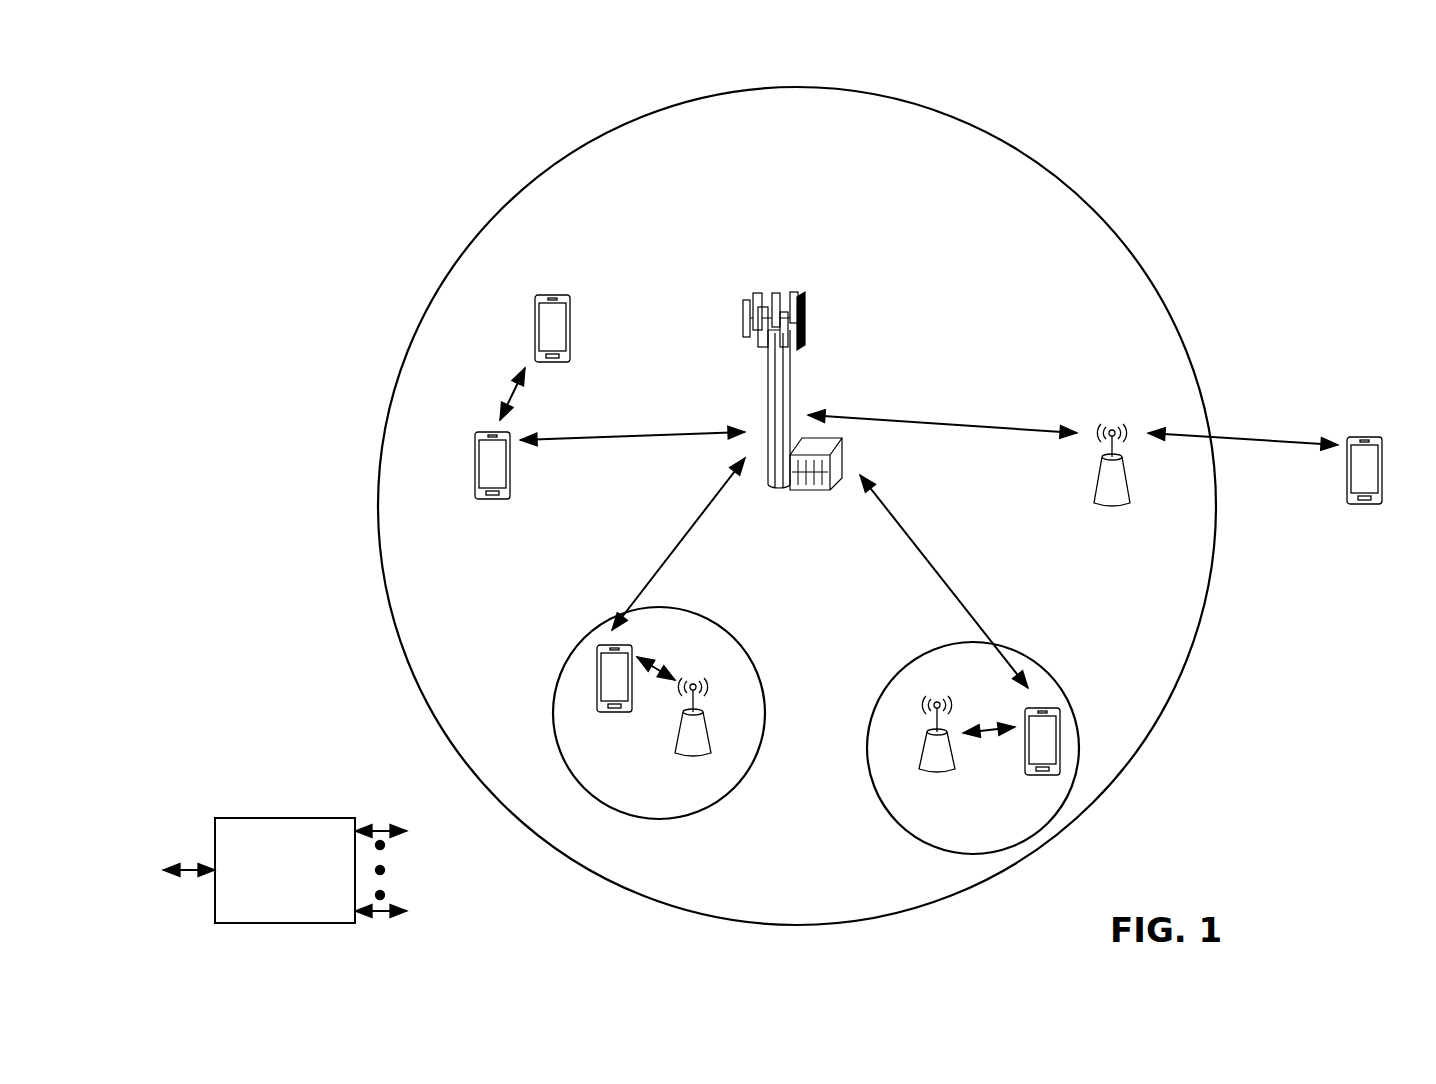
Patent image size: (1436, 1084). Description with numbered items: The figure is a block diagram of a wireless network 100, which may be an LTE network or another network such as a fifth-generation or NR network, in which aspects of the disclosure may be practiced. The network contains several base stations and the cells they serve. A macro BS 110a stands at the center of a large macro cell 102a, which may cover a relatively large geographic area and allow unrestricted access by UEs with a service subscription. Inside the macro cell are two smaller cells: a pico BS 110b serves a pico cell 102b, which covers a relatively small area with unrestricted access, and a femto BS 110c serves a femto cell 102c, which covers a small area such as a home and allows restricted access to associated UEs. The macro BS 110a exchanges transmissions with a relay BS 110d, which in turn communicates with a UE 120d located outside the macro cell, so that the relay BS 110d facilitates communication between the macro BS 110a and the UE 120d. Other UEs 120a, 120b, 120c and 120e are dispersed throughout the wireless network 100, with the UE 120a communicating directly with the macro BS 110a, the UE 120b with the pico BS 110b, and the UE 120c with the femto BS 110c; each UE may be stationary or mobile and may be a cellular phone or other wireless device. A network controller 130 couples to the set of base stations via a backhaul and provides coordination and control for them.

The wireless network 100 is at (268, 81).
The macro cell 102a is at (1083, 186).
The pico cell 102b is at (750, 649).
The femto cell 102c is at (910, 662).
The macro BS 110a is at (787, 282).
The pico BS 110b is at (714, 742).
The femto BS 110c is at (922, 753).
The relay BS 110d is at (1113, 424).
The UE 120a is at (473, 462).
The UE 120b is at (600, 713).
The UE 120c is at (1023, 777).
The UE 120d is at (1376, 436).
The UE 120e is at (535, 315).
The network controller 130 is at (282, 818).